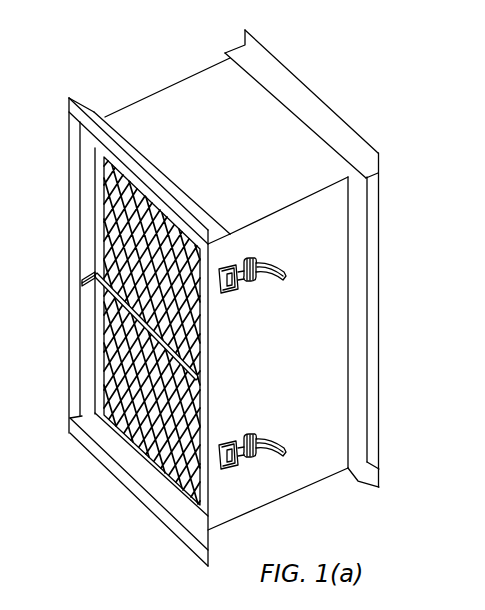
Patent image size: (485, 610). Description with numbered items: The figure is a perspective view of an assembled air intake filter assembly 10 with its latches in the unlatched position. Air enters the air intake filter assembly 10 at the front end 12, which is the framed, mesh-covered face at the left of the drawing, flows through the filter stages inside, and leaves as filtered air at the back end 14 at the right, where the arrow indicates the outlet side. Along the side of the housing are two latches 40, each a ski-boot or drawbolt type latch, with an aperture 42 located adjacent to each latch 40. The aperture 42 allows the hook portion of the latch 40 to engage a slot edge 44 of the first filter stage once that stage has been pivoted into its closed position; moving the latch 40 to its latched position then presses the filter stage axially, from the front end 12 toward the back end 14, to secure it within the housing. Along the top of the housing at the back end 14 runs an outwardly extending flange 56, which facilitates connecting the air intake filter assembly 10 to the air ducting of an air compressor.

The air intake filter assembly 10 is at (219, 143).
The front end 12 is at (126, 494).
The back end 14 is at (386, 270).
The latch 40 is at (276, 263).
The aperture 42 is at (225, 268).
The slot edge 44 is at (225, 293).
The outwardly extending flange 56 is at (320, 107).